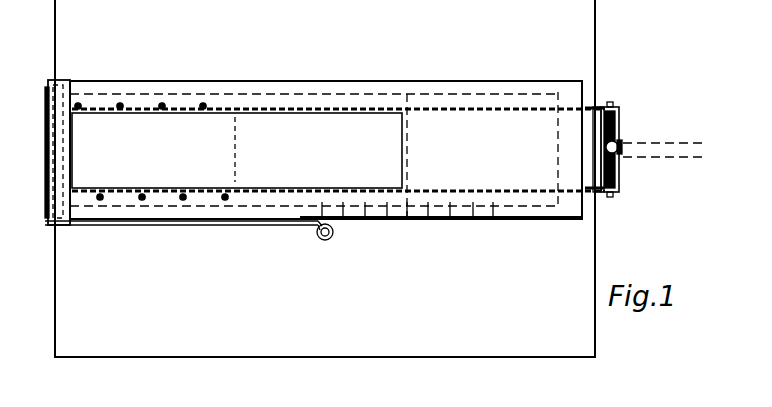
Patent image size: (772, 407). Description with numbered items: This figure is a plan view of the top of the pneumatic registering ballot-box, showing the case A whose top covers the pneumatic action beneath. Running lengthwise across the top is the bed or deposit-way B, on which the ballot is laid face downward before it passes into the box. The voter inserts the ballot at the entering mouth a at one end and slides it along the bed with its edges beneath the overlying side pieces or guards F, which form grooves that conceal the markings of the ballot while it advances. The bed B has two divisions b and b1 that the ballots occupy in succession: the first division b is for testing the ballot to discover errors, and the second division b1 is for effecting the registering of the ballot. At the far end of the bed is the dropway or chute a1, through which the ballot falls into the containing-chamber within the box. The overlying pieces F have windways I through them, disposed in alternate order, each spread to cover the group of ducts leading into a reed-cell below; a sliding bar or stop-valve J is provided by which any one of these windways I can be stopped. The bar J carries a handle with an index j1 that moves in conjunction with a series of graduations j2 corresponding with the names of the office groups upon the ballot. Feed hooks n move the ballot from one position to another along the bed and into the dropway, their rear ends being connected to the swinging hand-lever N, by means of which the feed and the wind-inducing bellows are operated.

The case A is at (325, 178).
The overlying side pieces or guards F is at (326, 150).
The sliding bar or stop-valve J is at (64, 152).
The entering mouth a is at (45, 160).
The feed devices or hooks n is at (596, 101).
The windways I is at (151, 156).
The bed or deposit-way B is at (237, 150).
The first division of the bed b is at (182, 149).
The second division of the bed b1 is at (333, 152).
The dropway or chute a1 is at (482, 154).
The index j1 is at (318, 237).
The graduations j2 is at (420, 222).
The swinging hand-lever N is at (646, 149).